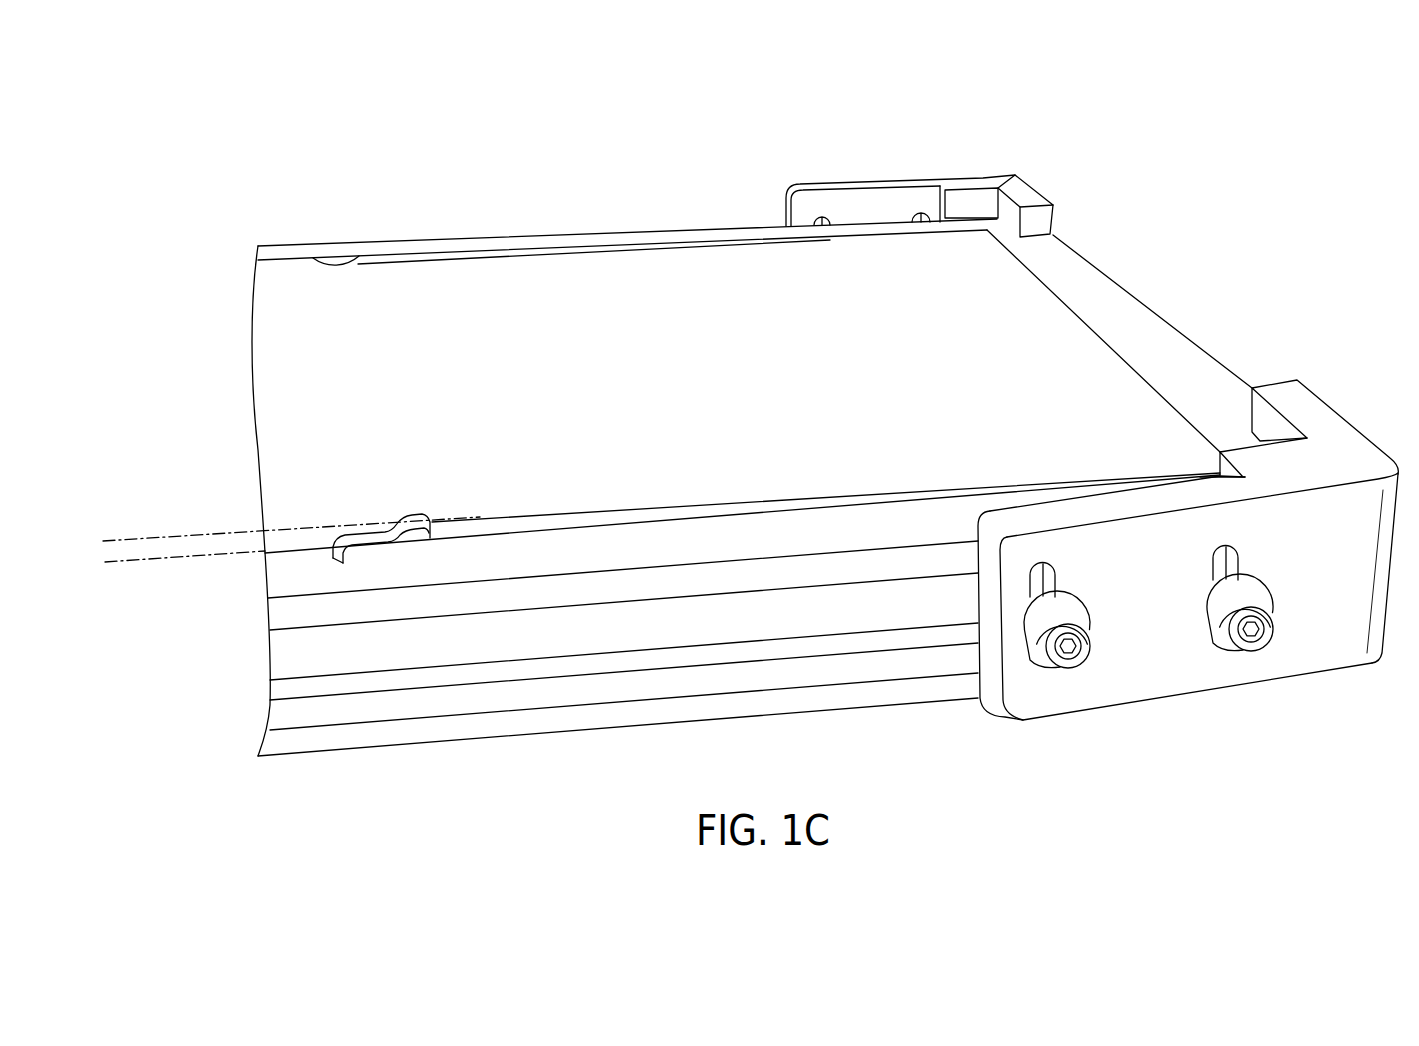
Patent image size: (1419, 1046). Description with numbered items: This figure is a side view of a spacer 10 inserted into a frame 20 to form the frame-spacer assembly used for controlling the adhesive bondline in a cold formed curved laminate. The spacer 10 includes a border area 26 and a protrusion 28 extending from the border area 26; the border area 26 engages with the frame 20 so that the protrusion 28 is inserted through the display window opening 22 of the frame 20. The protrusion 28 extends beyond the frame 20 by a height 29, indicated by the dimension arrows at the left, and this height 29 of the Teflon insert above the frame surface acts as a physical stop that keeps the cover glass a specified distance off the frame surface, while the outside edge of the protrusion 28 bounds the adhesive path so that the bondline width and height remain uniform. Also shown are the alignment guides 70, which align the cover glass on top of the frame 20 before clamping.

The spacer 10 is at (285, 612).
The frame 20 is at (280, 582).
The display window opening 22 is at (970, 302).
The border area 26 is at (505, 597).
The protrusion 28 is at (572, 330).
The height 29 is at (120, 485).
The guides 70 is at (993, 188).